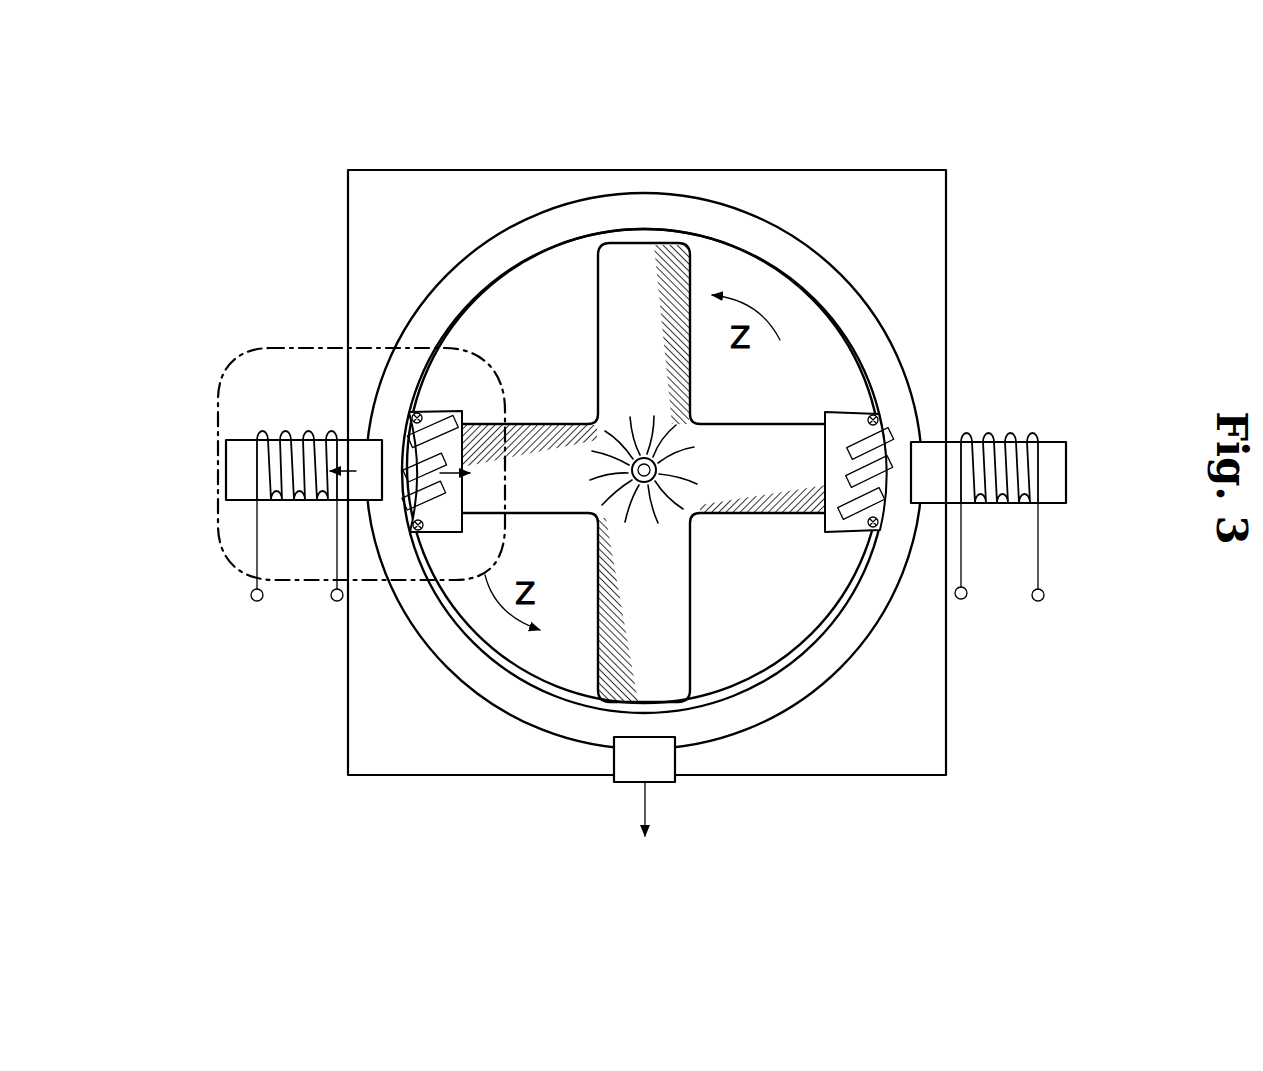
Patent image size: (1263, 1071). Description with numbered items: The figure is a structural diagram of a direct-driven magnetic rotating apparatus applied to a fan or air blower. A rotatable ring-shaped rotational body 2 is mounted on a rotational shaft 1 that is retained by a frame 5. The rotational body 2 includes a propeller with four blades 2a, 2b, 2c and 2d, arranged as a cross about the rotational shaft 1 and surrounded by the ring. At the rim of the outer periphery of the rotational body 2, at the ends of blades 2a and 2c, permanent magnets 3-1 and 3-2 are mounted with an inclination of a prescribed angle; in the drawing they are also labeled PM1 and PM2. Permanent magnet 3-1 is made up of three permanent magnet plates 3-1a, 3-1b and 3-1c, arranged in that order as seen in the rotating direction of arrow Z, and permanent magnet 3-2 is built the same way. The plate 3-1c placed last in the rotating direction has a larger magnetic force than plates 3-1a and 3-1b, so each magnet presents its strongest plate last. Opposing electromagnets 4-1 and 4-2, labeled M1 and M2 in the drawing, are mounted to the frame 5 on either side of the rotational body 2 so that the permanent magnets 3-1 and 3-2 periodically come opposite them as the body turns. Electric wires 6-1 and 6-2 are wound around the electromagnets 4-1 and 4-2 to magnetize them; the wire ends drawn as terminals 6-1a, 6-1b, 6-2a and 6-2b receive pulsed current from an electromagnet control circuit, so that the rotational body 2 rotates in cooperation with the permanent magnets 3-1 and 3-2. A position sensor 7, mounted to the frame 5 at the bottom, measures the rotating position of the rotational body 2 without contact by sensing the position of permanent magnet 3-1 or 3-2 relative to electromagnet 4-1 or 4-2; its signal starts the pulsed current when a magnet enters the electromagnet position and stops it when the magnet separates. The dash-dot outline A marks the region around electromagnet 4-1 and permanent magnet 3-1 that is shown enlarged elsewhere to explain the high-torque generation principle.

The rotational shaft 1 is at (641, 453).
The rotational body 2 is at (658, 245).
The blade 2a is at (558, 515).
The blade 2b is at (690, 585).
The blade 2c is at (760, 423).
The blade 2d is at (597, 313).
The permanent magnet 3-1 is at (496, 475).
The permanent magnet plate 3-1a is at (440, 490).
The permanent magnet plate 3-1b is at (463, 437).
The permanent magnet plate 3-1c is at (463, 418).
The permanent magnet 3-2 is at (843, 533).
The electromagnet 4-1 is at (269, 524).
The electromagnet 4-2 is at (1029, 521).
The frame 5 is at (453, 183).
The electric wire 6-1 is at (255, 540).
The coil terminal 6-1a is at (254, 603).
The coil terminal 6-1b is at (334, 603).
The electric wire 6-2 is at (1041, 548).
The coil terminal 6-2a is at (966, 598).
The coil terminal 6-2b is at (1043, 600).
The position sensor 7 is at (678, 783).
The part A is at (315, 347).
The electromagnet M1 is at (280, 397).
The electromagnet M2 is at (999, 403).
The permanent magnet PM1 is at (478, 392).
The permanent magnet PM2 is at (811, 385).